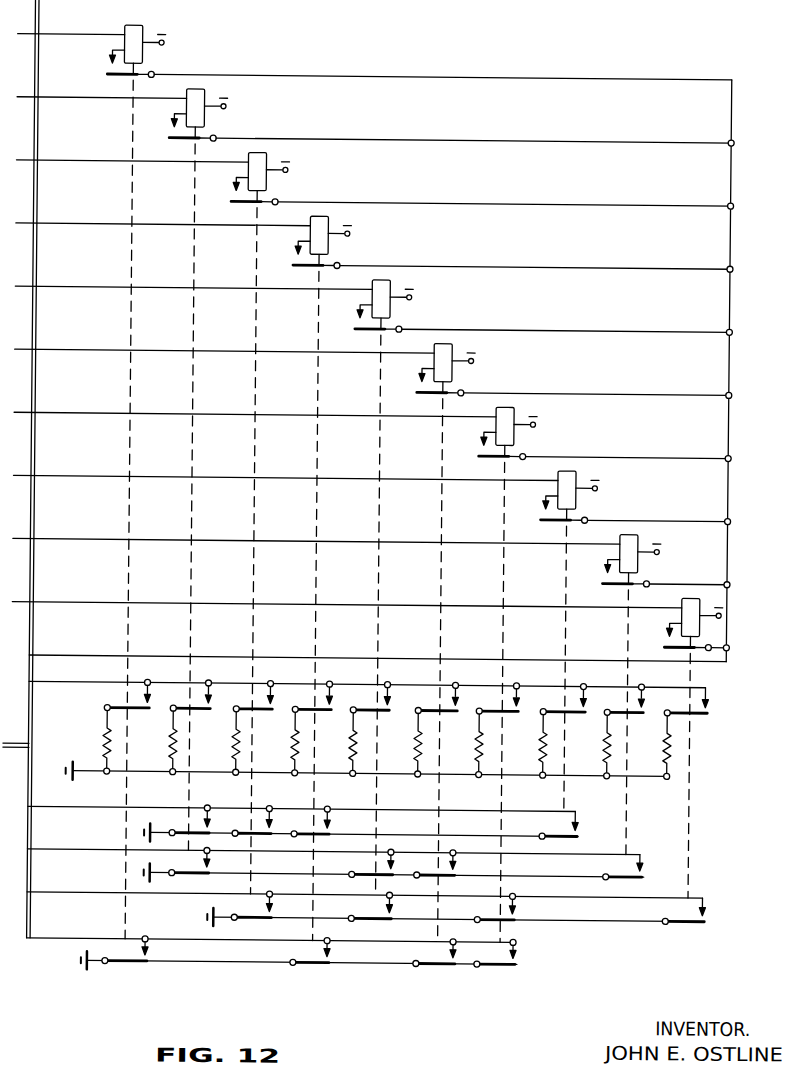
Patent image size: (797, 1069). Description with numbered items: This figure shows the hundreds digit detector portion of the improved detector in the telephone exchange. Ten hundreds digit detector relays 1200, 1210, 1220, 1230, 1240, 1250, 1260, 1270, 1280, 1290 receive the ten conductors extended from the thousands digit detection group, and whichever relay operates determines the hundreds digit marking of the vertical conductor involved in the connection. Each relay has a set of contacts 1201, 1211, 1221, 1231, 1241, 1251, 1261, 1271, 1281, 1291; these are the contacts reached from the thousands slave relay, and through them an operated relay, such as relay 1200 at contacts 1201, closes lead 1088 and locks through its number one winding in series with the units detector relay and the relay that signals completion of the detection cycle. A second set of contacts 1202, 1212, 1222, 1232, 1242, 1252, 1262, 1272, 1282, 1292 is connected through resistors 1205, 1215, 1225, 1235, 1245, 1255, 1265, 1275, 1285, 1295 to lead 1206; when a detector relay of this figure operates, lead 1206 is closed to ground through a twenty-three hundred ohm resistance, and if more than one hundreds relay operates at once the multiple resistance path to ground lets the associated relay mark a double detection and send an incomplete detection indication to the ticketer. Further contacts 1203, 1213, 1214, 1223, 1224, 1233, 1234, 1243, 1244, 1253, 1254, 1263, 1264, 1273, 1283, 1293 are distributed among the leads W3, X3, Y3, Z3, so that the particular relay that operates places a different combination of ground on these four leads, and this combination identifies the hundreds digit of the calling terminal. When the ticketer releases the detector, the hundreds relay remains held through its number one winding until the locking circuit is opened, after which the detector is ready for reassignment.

The hundreds digit detector relay 1200 is at (19, 1).
The hundreds digit detector relay 1210 is at (139, 464).
The hundreds digit detector relay 1220 is at (164, 517).
The hundreds digit detector relay 1230 is at (198, 572).
The hundreds digit detector relay 1240 is at (227, 581).
The hundreds digit detector relay 1250 is at (256, 636).
The hundreds digit detector relay 1260 is at (285, 668).
The hundreds digit detector relay 1270 is at (320, 634).
The hundreds digit detector relay 1280 is at (349, 687).
The hundreds digit detector relay 1290 is at (393, 740).
The contacts of relay 1200 1201 is at (395, 73).
The contacts of relay 1210 1211 is at (427, 136).
The contacts of relay 1220 1221 is at (458, 199).
The contacts of relay 1230 1231 is at (489, 263).
The contacts of relay 1240 1241 is at (518, 328).
The contacts of relay 1250 1251 is at (550, 389).
The contacts of relay 1260 1261 is at (581, 453).
The contacts of relay 1270 1271 is at (612, 516).
The contacts of relay 1280 1281 is at (642, 580).
The contacts of relay 1290 1291 is at (672, 643).
The relay contact 1202 is at (151, 698).
The relay contact 1212 is at (217, 698).
The relay contact 1222 is at (280, 698).
The relay contact 1232 is at (339, 698).
The relay contact 1242 is at (397, 698).
The relay contact 1252 is at (462, 698).
The relay contact 1262 is at (523, 698).
The relay contact 1272 is at (587, 698).
The relay contact 1282 is at (651, 698).
The relay contact 1292 is at (711, 698).
The resistor 1205 is at (118, 743).
The resistor 1215 is at (184, 743).
The resistor 1225 is at (247, 743).
The resistor 1235 is at (306, 743).
The resistor 1245 is at (364, 743).
The resistor 1255 is at (429, 743).
The resistor 1265 is at (490, 743).
The resistor 1275 is at (554, 743).
The resistor 1285 is at (618, 743).
The resistor 1295 is at (678, 743).
The relay contact 1203 is at (125, 949).
The relay contact 1213 is at (215, 820).
The relay contact 1214 is at (217, 860).
The relay contact 1223 is at (278, 820).
The relay contact 1224 is at (280, 904).
The relay contact 1233 is at (337, 820).
The relay contact 1234 is at (324, 948).
The relay contact 1243 is at (399, 860).
The relay contact 1244 is at (397, 904).
The relay contact 1253 is at (463, 860).
The relay contact 1254 is at (455, 948).
The relay contact 1263 is at (522, 904).
The relay contact 1264 is at (522, 948).
The relay contact 1273 is at (584, 820).
The relay contact 1283 is at (641, 860).
The relay contact 1293 is at (706, 904).
The lead 1088 is at (44, 654).
The lead 1206 is at (44, 681).
The W3 lead W3 is at (45, 806).
The X3 lead X3 is at (46, 848).
The Y3 lead Y3 is at (46, 891).
The Z3 lead Z3 is at (46, 937).